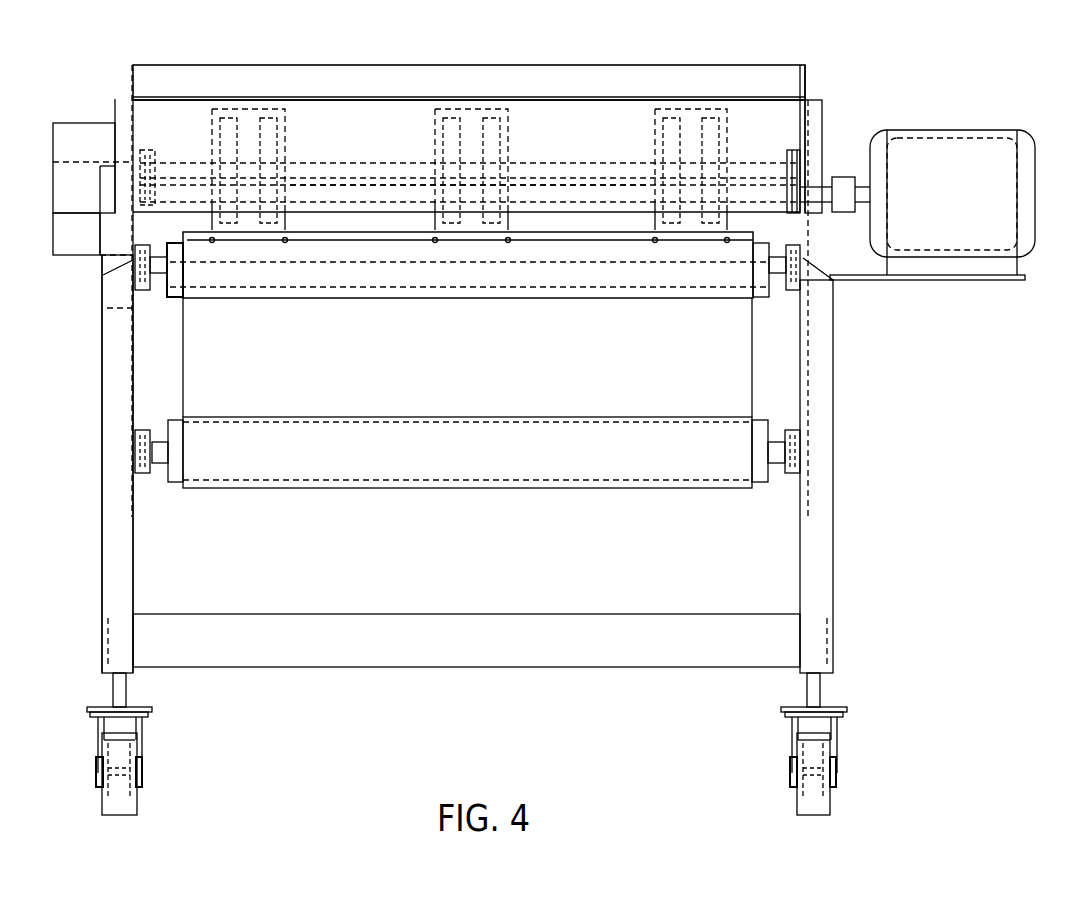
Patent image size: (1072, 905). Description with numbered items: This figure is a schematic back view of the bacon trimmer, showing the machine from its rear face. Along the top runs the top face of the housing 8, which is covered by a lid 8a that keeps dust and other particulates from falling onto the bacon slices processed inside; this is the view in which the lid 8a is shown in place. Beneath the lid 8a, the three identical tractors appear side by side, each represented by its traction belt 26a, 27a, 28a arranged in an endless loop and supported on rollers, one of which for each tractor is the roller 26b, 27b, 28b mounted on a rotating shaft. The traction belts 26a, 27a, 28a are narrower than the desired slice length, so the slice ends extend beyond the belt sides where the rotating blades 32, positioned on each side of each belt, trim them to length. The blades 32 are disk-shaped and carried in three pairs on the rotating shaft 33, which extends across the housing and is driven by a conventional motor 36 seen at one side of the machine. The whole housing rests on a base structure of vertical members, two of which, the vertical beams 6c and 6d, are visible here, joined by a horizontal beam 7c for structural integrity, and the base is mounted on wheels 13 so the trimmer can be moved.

The top face of the housing 8 is at (548, 58).
The lid 8a is at (795, 78).
The traction belt 26a is at (280, 106).
The roller 26b is at (257, 108).
The traction belt 27a is at (503, 106).
The roller 27b is at (480, 108).
The traction belt 28a is at (722, 106).
The roller 28b is at (700, 108).
The rotating blades 32 is at (202, 173).
The rotating shaft 33 is at (563, 195).
The motor 36 is at (1027, 206).
The vertical member 6c is at (833, 502).
The vertical member 6d is at (133, 560).
The cross member 7c is at (515, 613).
The wheels 13 is at (143, 762).